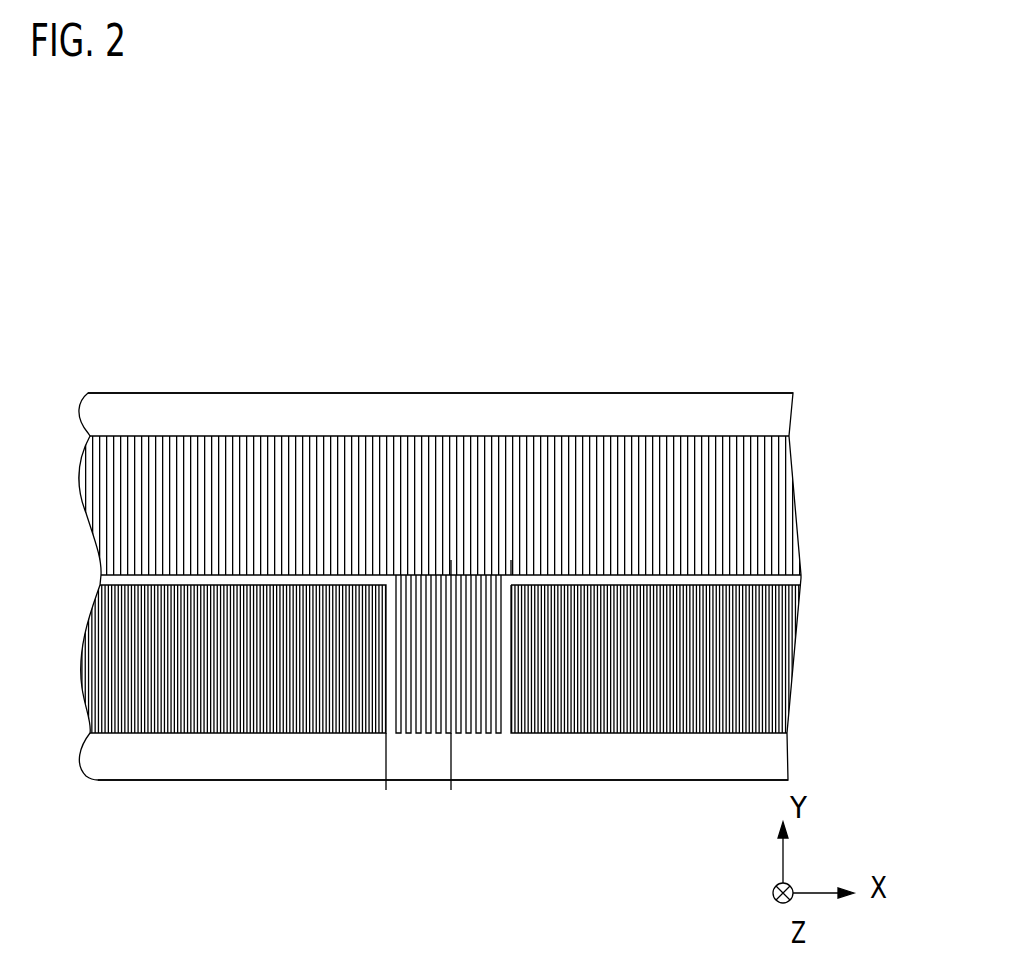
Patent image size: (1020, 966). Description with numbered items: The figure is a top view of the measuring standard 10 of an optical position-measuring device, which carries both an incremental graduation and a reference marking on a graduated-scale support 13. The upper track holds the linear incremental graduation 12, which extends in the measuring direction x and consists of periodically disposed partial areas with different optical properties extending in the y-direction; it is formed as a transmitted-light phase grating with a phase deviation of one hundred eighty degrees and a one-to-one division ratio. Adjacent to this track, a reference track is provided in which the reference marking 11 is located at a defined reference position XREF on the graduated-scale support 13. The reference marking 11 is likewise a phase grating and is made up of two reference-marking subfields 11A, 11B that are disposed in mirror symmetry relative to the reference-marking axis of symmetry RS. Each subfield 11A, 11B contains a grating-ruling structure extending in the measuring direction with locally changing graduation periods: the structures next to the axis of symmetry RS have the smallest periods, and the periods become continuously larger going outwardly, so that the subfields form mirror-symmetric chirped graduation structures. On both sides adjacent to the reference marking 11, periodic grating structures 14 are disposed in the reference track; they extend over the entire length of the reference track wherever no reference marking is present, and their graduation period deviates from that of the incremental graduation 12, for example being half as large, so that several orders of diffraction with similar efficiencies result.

The measuring standard 10 is at (458, 365).
The reference marking 11 is at (493, 746).
The reference-marking subfield 11A is at (443, 785).
The reference-marking subfield 11B is at (503, 553).
The incremental graduation 12 is at (830, 477).
The graduated-scale support 13 is at (739, 391).
The grating structures 14 is at (832, 648).
The reference-marking axis of symmetry RS is at (445, 537).
The reference position XREF is at (443, 745).